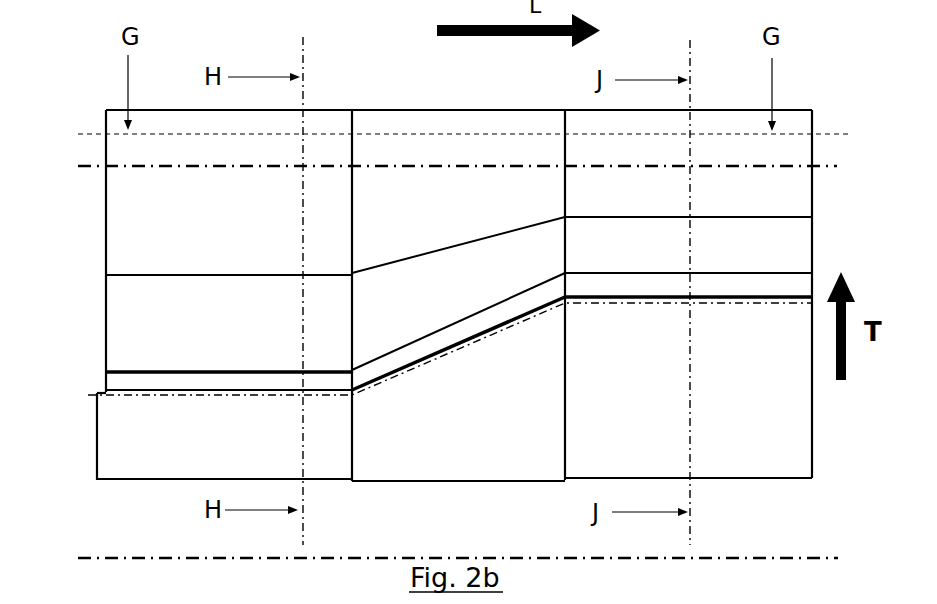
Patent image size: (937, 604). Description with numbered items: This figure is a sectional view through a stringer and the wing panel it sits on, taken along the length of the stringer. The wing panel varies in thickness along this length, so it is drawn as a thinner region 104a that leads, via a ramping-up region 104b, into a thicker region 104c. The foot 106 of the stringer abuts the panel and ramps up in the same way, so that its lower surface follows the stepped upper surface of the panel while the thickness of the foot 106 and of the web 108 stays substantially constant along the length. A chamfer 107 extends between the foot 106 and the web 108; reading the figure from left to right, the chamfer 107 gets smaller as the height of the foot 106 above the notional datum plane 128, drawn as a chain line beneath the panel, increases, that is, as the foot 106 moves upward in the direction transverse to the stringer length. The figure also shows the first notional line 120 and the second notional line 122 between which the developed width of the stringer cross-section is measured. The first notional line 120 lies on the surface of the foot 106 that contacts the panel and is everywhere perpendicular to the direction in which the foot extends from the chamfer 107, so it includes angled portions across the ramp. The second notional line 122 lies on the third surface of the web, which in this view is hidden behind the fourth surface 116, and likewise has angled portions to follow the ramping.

The web 108 is at (133, 218).
The fourth surface 116 is at (263, 233).
The second notional line 122 is at (418, 165).
The chamfer 107 is at (133, 307).
The foot 106 is at (122, 381).
The first notional line 120 is at (597, 305).
The thinner region 104a is at (252, 453).
The ramping-up region 104b is at (487, 450).
The thicker region 104c is at (782, 450).
The notional datum plane 128 is at (122, 556).